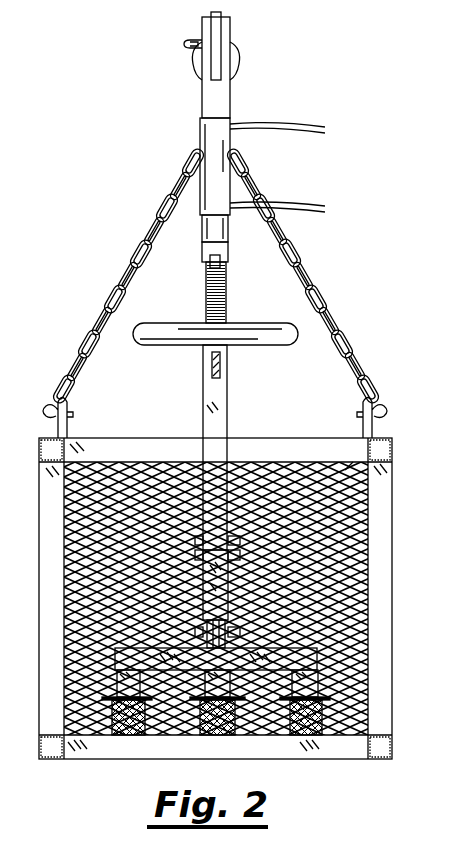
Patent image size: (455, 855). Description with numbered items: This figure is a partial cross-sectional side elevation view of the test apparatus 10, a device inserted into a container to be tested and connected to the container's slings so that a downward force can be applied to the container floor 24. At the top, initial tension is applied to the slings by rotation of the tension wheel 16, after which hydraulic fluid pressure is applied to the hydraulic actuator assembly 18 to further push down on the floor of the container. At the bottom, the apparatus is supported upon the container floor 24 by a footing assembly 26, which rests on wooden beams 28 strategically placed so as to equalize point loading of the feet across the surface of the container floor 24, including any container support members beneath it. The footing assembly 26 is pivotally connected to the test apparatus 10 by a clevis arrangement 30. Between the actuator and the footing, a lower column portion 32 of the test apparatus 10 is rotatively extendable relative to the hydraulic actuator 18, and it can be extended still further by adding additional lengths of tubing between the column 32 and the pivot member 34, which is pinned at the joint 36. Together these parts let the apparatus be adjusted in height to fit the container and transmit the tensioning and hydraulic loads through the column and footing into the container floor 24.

The test apparatus 10 is at (90, 211).
The tension wheel 16 is at (268, 338).
The hydraulic actuator assembly 18 is at (206, 153).
The container floor 24 is at (337, 737).
The footing assembly 26 is at (322, 653).
The wooden beams 28 is at (128, 737).
The clevis arrangement 30 is at (178, 627).
The lower column portion 32 is at (206, 415).
The pivot member 34 is at (178, 597).
The joint 36 is at (212, 540).